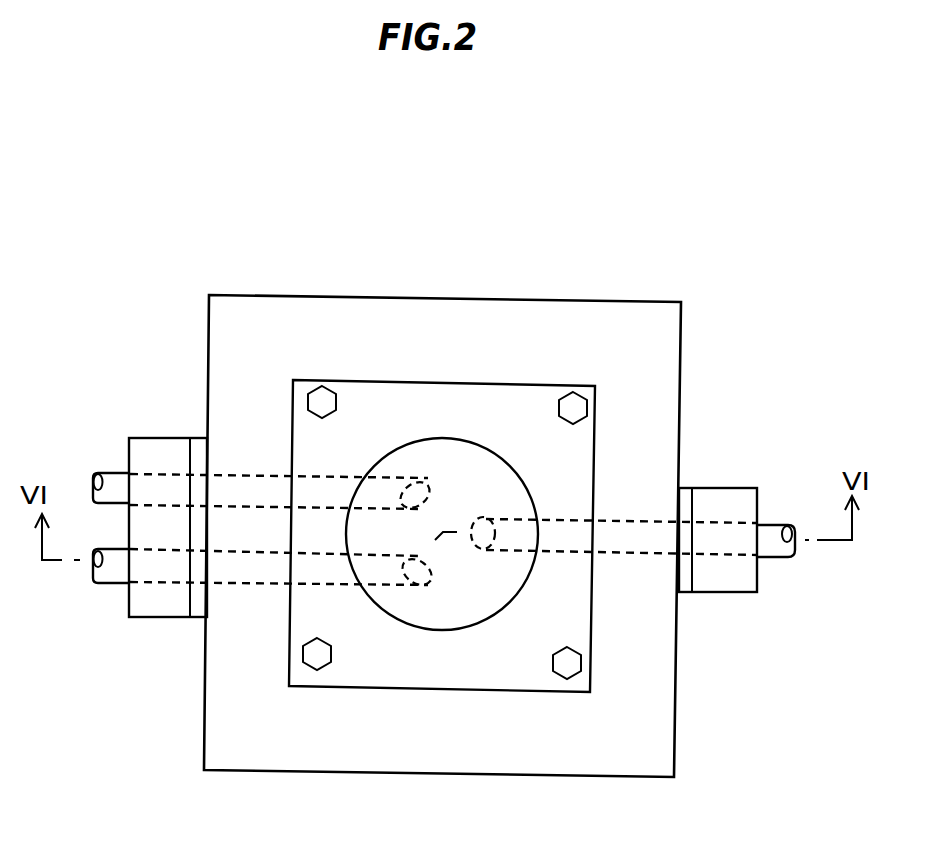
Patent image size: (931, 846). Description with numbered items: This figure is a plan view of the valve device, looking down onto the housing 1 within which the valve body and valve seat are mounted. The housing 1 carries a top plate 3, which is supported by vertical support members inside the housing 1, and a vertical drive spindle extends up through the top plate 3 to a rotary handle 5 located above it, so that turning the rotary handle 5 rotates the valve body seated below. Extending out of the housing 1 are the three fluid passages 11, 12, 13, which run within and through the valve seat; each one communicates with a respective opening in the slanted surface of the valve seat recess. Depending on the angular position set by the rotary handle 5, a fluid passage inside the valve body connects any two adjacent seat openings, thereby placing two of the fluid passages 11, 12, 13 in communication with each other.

The housing 1 is at (649, 415).
The top plate 3 is at (533, 402).
The rotary handle 5 is at (449, 460).
The fluid passage 11 is at (112, 583).
The fluid passage 12 is at (118, 472).
The fluid passage 13 is at (773, 525).